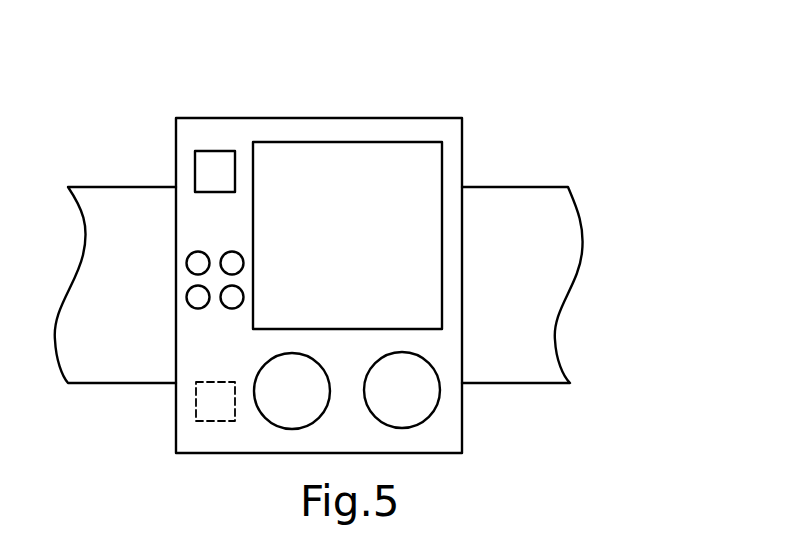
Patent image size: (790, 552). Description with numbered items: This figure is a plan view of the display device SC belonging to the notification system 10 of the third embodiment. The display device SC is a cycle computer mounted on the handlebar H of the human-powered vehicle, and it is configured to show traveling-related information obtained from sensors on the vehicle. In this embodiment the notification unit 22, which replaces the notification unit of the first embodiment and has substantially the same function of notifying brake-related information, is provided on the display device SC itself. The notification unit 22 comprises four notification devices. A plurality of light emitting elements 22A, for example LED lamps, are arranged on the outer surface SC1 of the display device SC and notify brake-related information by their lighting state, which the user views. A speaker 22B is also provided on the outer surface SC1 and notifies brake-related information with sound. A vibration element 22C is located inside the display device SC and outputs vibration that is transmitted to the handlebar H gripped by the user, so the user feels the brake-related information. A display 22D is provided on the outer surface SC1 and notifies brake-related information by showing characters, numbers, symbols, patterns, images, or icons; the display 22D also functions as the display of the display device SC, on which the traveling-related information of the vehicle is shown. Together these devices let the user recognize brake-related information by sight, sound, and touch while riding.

The notification system 10 is at (319, 239).
The notification unit 22 is at (321, 251).
The light emitting element 22A is at (186, 265).
The speaker 22B is at (195, 172).
The vibration element 22C is at (196, 400).
The display 22D is at (443, 233).
The display device SC is at (463, 131).
The outer surface SC1 is at (454, 280).
The handlebar H is at (530, 187).